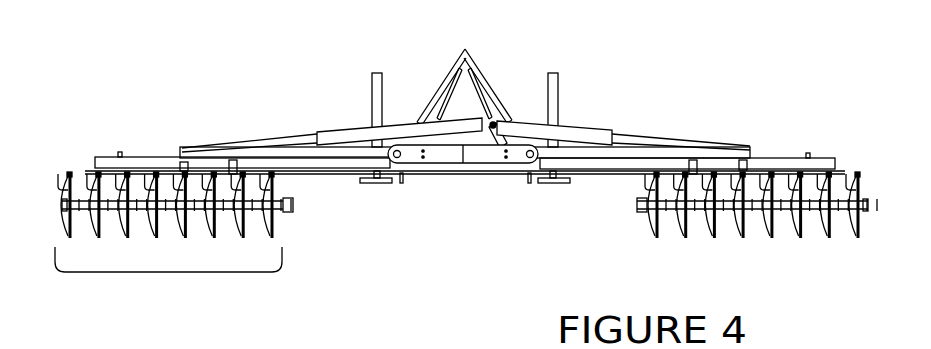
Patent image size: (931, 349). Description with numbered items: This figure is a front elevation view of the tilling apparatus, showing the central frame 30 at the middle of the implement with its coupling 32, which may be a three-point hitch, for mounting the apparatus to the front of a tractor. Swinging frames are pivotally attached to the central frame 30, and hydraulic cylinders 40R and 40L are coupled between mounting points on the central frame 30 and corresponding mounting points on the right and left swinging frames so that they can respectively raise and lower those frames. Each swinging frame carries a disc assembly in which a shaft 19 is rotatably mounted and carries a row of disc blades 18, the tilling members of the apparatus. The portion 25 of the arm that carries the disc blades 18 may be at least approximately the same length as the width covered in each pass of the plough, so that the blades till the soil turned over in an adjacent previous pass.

The disc blades 18 is at (275, 227).
The shaft 19 is at (132, 155).
The portion of arms carrying tilling members 25 is at (231, 272).
The central frame 30 is at (435, 158).
The coupling 32 is at (375, 77).
The hydraulic cylinder 40R is at (340, 137).
The hydraulic cylinder 40L is at (578, 137).